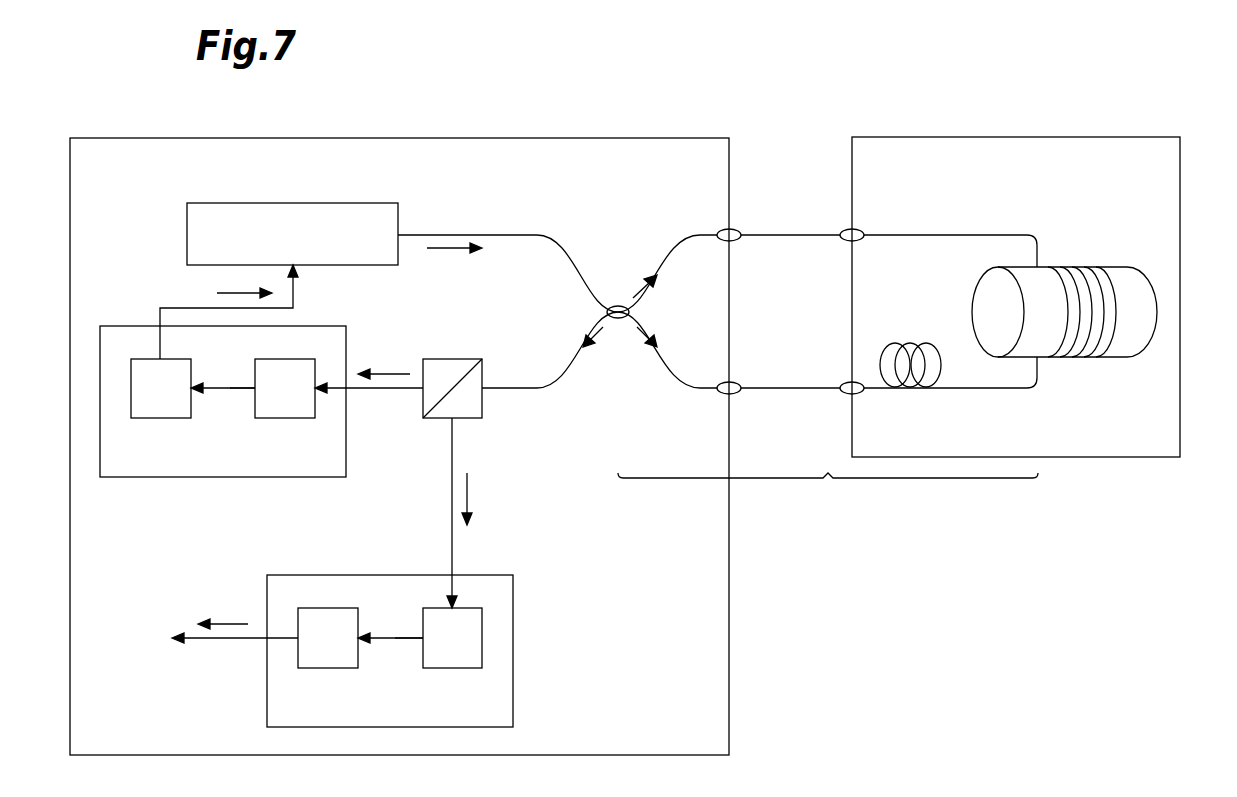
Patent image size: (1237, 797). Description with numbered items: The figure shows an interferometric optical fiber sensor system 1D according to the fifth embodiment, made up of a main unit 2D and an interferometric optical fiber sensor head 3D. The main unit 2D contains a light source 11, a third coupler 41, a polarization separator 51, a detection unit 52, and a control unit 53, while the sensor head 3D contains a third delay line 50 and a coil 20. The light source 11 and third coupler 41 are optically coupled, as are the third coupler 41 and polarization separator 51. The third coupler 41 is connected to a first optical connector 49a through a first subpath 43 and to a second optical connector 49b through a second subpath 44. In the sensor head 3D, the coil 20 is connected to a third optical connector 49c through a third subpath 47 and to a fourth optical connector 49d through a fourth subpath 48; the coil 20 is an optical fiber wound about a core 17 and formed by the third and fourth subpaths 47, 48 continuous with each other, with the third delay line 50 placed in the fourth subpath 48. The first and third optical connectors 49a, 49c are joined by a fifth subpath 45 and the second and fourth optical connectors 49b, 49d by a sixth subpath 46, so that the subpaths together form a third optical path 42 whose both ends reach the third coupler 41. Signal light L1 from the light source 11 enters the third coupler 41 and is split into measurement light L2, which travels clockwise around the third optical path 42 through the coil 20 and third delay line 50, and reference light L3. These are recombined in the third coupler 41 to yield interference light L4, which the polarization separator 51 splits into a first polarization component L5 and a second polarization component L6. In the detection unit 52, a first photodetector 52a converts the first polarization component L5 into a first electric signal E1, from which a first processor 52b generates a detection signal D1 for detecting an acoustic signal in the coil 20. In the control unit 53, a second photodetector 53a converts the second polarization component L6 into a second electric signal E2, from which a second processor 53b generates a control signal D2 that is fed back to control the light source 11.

The interferometric optical fiber sensor system 1D is at (148, 90).
The main unit 2D is at (633, 137).
The interferometric optical fiber sensor head 3D is at (1128, 137).
The light source 11 is at (297, 203).
The core 17 is at (1115, 268).
The coil 20 is at (1170, 289).
The third coupler 41 is at (612, 305).
The third optical path 42 is at (828, 493).
The first subpath 43 is at (703, 235).
The second subpath 44 is at (703, 390).
The fifth subpath 45 is at (790, 234).
The sixth subpath 46 is at (790, 386).
The third subpath 47 is at (1000, 235).
The fourth subpath 48 is at (998, 390).
The first optical connector 49a is at (737, 229).
The second optical connector 49b is at (737, 382).
The third optical connector 49c is at (848, 229).
The fourth optical connector 49d is at (848, 382).
The third delay line 50 is at (912, 344).
The polarization separator 51 is at (445, 359).
The detection unit 52 is at (305, 575).
The first photodetector 52a is at (452, 668).
The first processor 52b is at (328, 668).
The control unit 53 is at (135, 326).
The second photodetector 53a is at (285, 418).
The second processor 53b is at (160, 418).
The signal light L1 is at (453, 253).
The measurement light L2 is at (635, 285).
The reference light L3 is at (638, 333).
The interference light L4 is at (602, 333).
The first polarization component L5 is at (470, 490).
The second polarization component L6 is at (389, 374).
The detection signal D1 is at (228, 622).
The control signal D2 is at (217, 293).
The first electric signal E1 is at (395, 636).
The second electric signal E2 is at (228, 388).